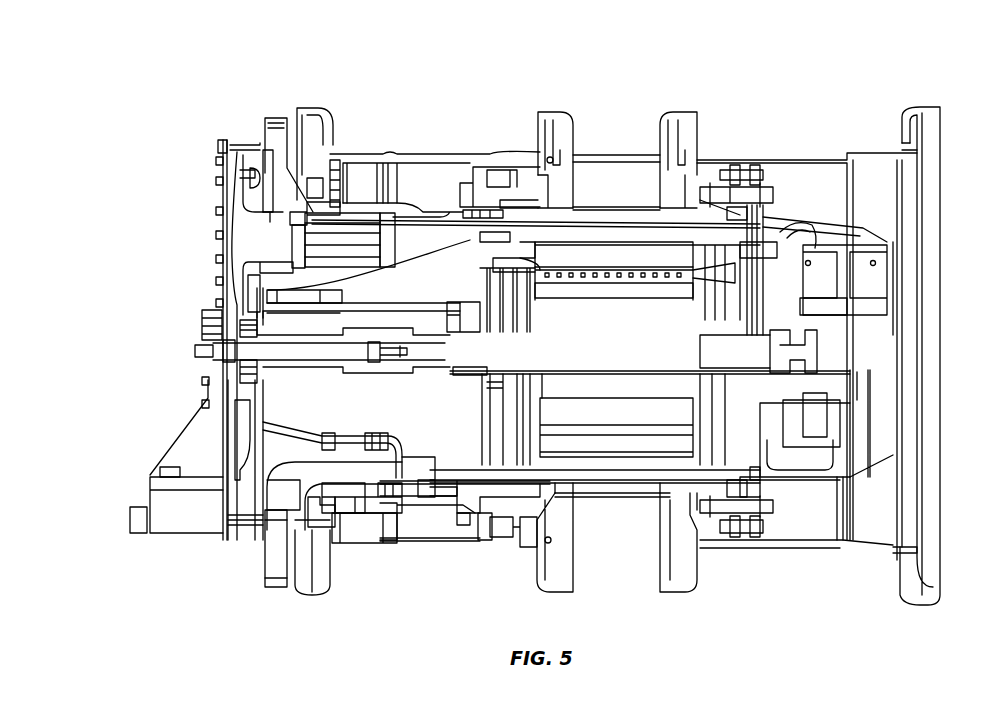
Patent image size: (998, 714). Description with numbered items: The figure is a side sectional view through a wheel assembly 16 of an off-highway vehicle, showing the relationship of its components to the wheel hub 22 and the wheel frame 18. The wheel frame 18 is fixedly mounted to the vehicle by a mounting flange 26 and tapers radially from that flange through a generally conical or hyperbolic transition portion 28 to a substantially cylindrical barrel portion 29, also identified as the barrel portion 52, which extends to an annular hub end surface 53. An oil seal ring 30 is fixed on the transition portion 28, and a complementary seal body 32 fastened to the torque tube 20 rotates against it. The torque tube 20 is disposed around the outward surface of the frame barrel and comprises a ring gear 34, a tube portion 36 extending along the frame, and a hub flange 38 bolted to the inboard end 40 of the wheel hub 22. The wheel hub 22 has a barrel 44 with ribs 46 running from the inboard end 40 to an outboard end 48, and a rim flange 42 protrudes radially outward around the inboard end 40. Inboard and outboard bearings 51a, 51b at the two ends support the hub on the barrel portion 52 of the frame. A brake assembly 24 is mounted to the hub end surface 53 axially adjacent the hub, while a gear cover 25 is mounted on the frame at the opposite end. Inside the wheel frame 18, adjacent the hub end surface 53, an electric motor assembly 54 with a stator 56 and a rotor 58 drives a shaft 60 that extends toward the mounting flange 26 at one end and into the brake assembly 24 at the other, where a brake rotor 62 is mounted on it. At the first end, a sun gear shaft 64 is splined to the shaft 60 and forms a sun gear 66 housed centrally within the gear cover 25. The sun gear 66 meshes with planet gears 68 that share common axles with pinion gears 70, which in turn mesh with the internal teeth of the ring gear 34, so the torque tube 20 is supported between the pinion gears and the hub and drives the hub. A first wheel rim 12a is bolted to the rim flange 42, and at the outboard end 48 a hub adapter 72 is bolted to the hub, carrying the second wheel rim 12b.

The wheel assembly 16 is at (225, 70).
The first wheel rim 12a is at (440, 85).
The second wheel rim 12b is at (782, 85).
The wheel frame 18 is at (270, 590).
The torque tube 20 is at (405, 575).
The wheel hub 22 is at (606, 575).
The brake assembly 24 is at (855, 405).
The gear cover 25 is at (220, 207).
The mounting flange 26 is at (285, 530).
The transition portion 28 is at (293, 513).
The barrel portion 29 is at (653, 207).
The oil seal ring 30 is at (318, 545).
The seal body 32 is at (335, 540).
The ring gear 34 is at (362, 510).
The tube portion 36 is at (438, 493).
The hub flange 38 is at (458, 516).
The inboard end 40 is at (518, 525).
The rim flange 42 is at (478, 528).
The barrel 44 is at (583, 487).
The ribs 46 is at (648, 510).
The outboard end 48 is at (700, 530).
The inboard bearing 51a is at (528, 205).
The outboard bearing 51b is at (713, 190).
The barrel portion 52 is at (430, 480).
The hub end surface 53 is at (735, 522).
The electric motor assembly 54 is at (627, 238).
The stator 56 is at (597, 250).
The rotor 58 is at (575, 283).
The shaft 60 is at (423, 343).
The brake rotor 62 is at (818, 337).
The sun gear shaft 64 is at (228, 358).
The sun gear 66 is at (222, 330).
The planet gears 68 is at (238, 250).
The pinion gears 70 is at (352, 228).
The hub adapter 72 is at (752, 178).